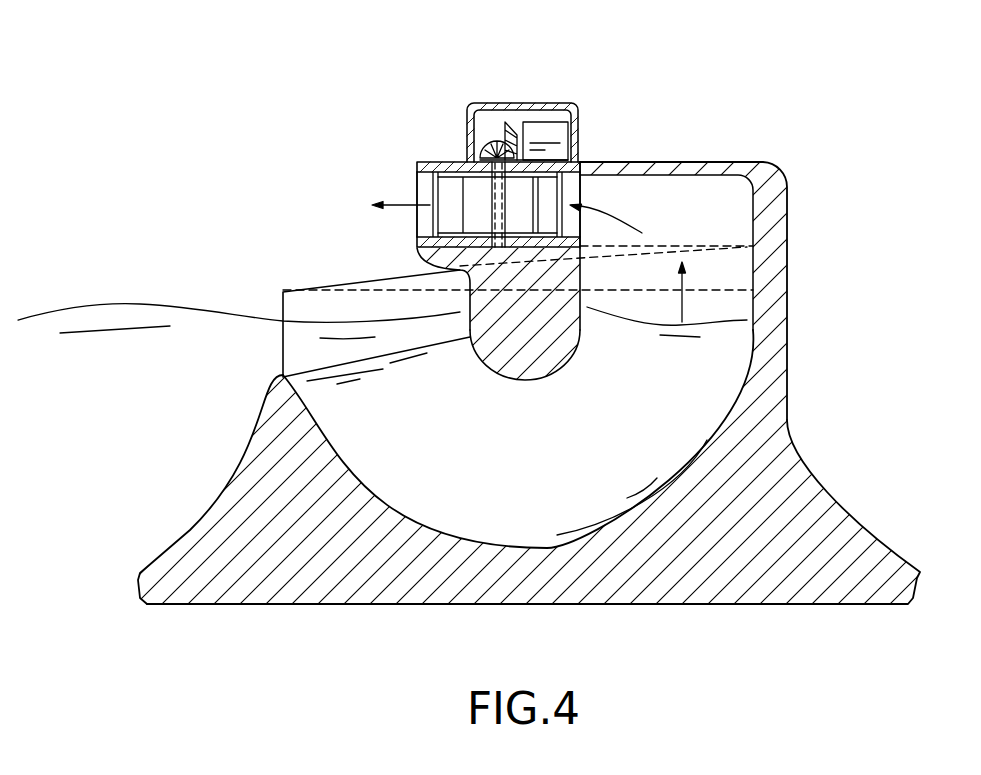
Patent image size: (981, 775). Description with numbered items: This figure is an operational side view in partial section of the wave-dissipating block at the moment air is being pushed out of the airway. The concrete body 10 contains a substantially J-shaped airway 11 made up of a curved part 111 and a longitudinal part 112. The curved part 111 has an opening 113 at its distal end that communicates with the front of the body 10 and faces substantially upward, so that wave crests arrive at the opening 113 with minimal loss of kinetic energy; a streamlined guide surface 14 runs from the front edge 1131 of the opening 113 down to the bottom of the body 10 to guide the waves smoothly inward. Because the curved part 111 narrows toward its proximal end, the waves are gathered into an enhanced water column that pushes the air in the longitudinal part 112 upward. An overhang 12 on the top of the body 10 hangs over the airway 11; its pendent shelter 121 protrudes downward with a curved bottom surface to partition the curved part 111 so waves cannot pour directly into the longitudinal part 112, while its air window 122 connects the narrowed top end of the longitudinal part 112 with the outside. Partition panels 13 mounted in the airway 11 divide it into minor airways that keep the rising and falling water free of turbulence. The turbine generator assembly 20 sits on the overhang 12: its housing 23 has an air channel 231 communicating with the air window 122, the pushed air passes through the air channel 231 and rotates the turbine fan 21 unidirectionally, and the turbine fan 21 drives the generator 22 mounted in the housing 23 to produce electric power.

The body 10 is at (752, 112).
The airway 11 is at (700, 418).
The curved part 111 is at (453, 503).
The longitudinal part 112 is at (717, 213).
The opening 113 is at (358, 355).
The front edge 1131 is at (283, 377).
The overhang 12 is at (457, 303).
The pendent shelter 121 is at (524, 378).
The air window 122 is at (582, 190).
The partition panels 13 is at (320, 367).
The guide surface 14 is at (208, 513).
The turbine generator assembly 20 is at (479, 88).
The turbine fan 21 is at (492, 198).
The generator 22 is at (545, 132).
The housing 23 is at (413, 172).
The air channel 231 is at (405, 188).